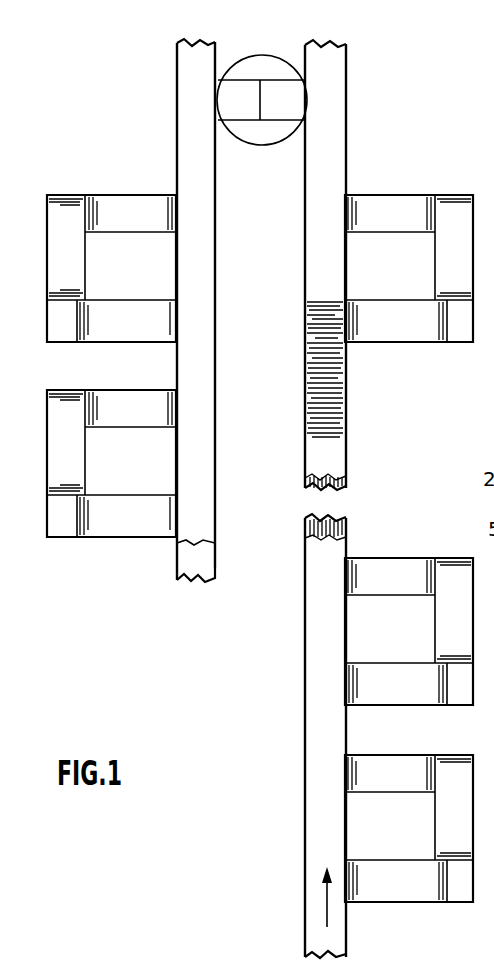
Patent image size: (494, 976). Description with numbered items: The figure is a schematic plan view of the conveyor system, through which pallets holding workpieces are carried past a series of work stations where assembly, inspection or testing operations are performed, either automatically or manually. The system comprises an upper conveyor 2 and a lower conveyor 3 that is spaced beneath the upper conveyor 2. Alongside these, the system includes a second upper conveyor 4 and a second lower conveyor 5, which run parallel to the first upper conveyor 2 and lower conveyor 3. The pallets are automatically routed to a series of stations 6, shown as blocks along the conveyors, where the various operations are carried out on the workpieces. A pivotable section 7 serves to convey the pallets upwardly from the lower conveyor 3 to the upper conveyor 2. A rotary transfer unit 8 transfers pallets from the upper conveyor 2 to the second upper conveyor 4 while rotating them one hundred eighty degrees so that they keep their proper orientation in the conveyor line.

The upper conveyor 2 is at (310, 632).
The lower conveyor 3 is at (306, 528).
The second upper conveyor 4 is at (207, 468).
The lower conveyor 5 is at (215, 568).
The stations 6 is at (113, 186).
The pivotable section 7 is at (358, 412).
The rotary transfer unit 8 is at (270, 152).